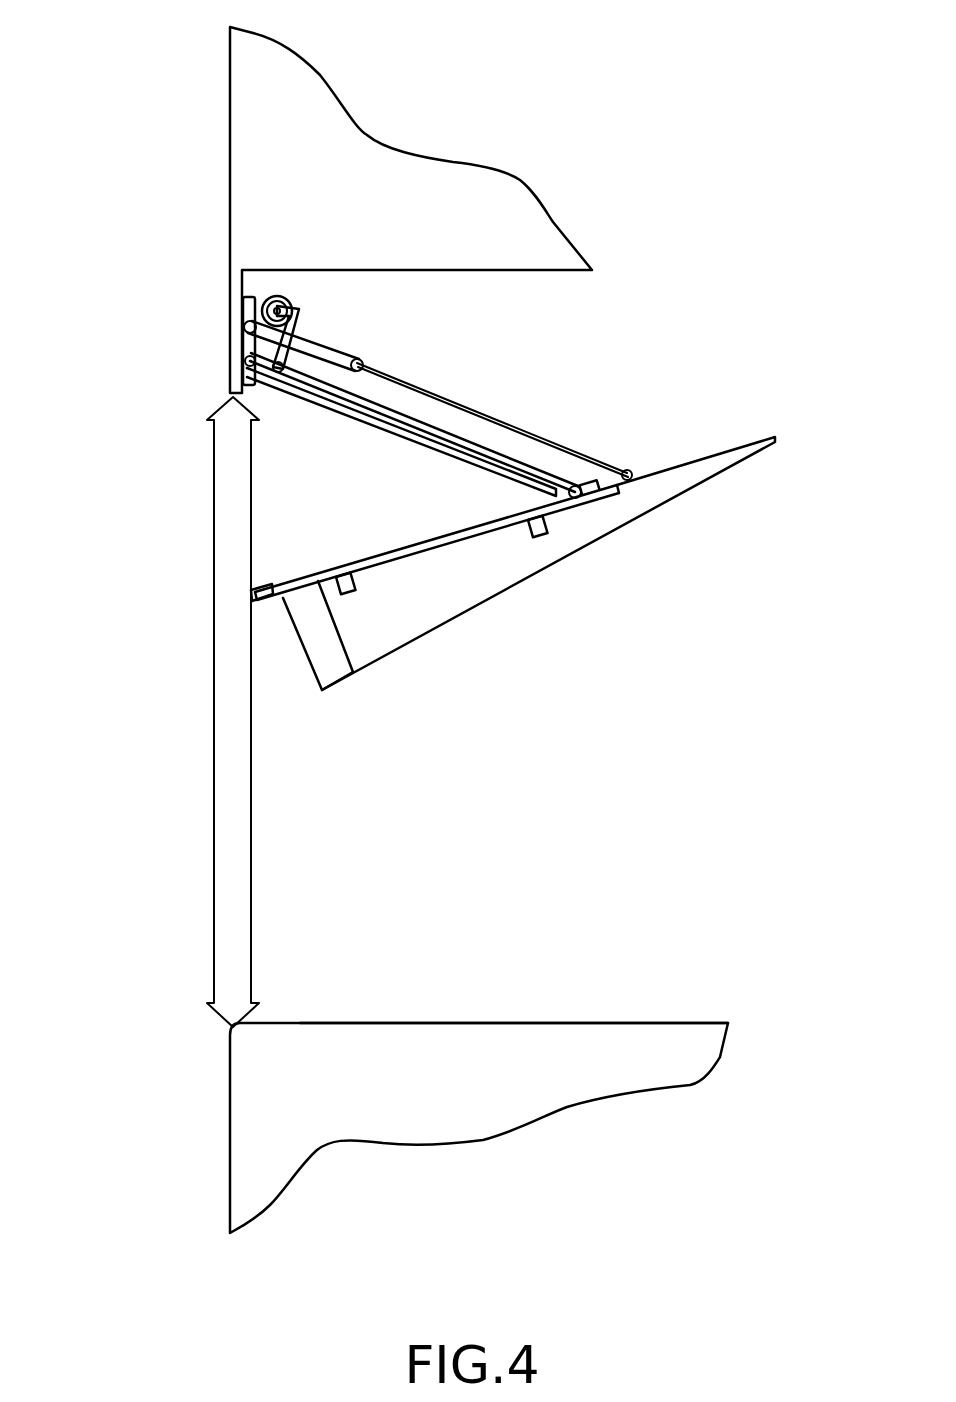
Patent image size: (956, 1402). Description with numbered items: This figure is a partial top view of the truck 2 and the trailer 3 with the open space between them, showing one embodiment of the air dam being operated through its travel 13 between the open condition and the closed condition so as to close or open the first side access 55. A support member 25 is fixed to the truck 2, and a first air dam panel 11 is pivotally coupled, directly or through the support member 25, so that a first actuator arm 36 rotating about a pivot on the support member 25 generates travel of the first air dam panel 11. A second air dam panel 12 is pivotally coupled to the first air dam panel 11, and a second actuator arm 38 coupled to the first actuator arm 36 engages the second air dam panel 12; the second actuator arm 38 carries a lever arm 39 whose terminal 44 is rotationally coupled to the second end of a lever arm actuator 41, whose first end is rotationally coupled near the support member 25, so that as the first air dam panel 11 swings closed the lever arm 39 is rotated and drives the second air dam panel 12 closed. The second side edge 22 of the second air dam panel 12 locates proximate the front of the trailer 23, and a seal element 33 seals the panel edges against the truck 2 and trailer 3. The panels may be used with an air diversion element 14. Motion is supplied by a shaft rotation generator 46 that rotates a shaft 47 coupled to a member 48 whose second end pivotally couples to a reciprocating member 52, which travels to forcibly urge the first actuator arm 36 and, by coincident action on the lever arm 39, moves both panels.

The truck 2 is at (420, 165).
The trailer 3 is at (538, 1098).
The first air dam panel 11 is at (356, 414).
The second air dam panel 12 is at (393, 552).
The travel 13 is at (220, 763).
The air diversion element 14 is at (498, 562).
The second side edge 22 is at (277, 583).
The front of the trailer 23 is at (515, 1023).
The support member 25 is at (242, 343).
The seal element 33 is at (265, 603).
The first actuator arm 36 is at (478, 442).
The second actuator arm 38 is at (395, 558).
The lever arm 39 is at (613, 490).
The lever arm actuator 41 is at (537, 437).
The lever arm terminal 44 is at (631, 472).
The shaft rotation generator 46 is at (288, 300).
The shaft 47 is at (297, 313).
The member 48 is at (303, 320).
The reciprocating member 52 is at (295, 339).
The first side access 55 is at (175, 613).